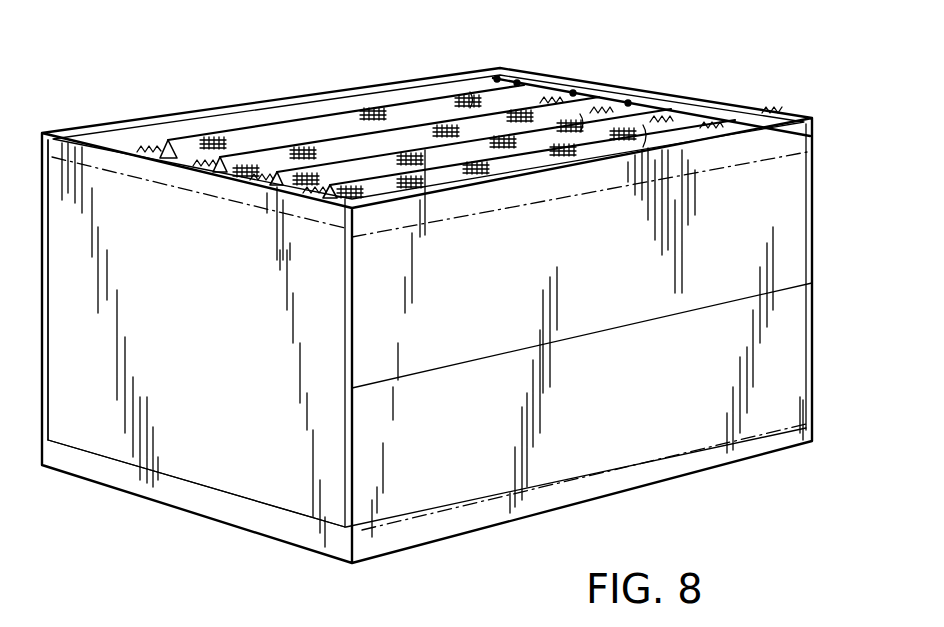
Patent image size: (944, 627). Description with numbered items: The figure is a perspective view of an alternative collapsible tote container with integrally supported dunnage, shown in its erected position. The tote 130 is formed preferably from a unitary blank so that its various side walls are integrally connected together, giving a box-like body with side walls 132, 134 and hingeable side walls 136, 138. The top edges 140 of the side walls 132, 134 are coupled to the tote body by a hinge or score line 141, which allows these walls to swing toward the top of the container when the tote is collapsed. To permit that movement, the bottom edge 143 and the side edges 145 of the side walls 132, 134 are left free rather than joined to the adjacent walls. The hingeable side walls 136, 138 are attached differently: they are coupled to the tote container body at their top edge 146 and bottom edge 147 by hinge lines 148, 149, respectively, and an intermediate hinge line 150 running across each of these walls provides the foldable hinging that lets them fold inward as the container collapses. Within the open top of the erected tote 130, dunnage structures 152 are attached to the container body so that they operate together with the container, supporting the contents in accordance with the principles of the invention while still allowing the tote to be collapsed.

The tote 130 is at (796, 16).
The side wall 132 is at (221, 357).
The side wall 134 is at (697, 127).
The hingeable side wall 136 is at (800, 203).
The hingeable side wall 138 is at (297, 105).
The top edge 140 is at (160, 158).
The hinge or score line 141 is at (219, 203).
The bottom edge 143 is at (219, 492).
The side edge 145 is at (48, 398).
The top edge 146 is at (514, 210).
The bottom edge 147 is at (661, 444).
The hinge line 148 is at (616, 186).
The hinge line 149 is at (580, 470).
The intermediate hinge line 150 is at (637, 327).
The dunnage structure 152 is at (457, 90).